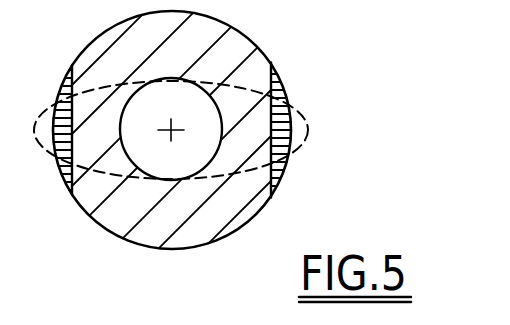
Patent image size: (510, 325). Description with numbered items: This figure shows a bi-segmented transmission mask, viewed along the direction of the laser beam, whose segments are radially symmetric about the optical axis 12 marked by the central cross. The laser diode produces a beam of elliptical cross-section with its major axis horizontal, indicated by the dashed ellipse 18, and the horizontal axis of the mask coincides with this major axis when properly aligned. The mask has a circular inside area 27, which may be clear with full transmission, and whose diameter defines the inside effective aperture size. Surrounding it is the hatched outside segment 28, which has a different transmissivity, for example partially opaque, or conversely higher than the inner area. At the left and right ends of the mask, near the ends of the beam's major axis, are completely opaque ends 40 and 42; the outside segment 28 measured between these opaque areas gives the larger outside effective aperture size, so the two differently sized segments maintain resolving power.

The optical axis 12 is at (172, 131).
The elliptical beam 18 is at (291, 105).
The inside circular clear area 27 is at (153, 100).
The outside segment 28 is at (225, 50).
The opaque end 40 is at (64, 176).
The opaque end 42 is at (280, 170).